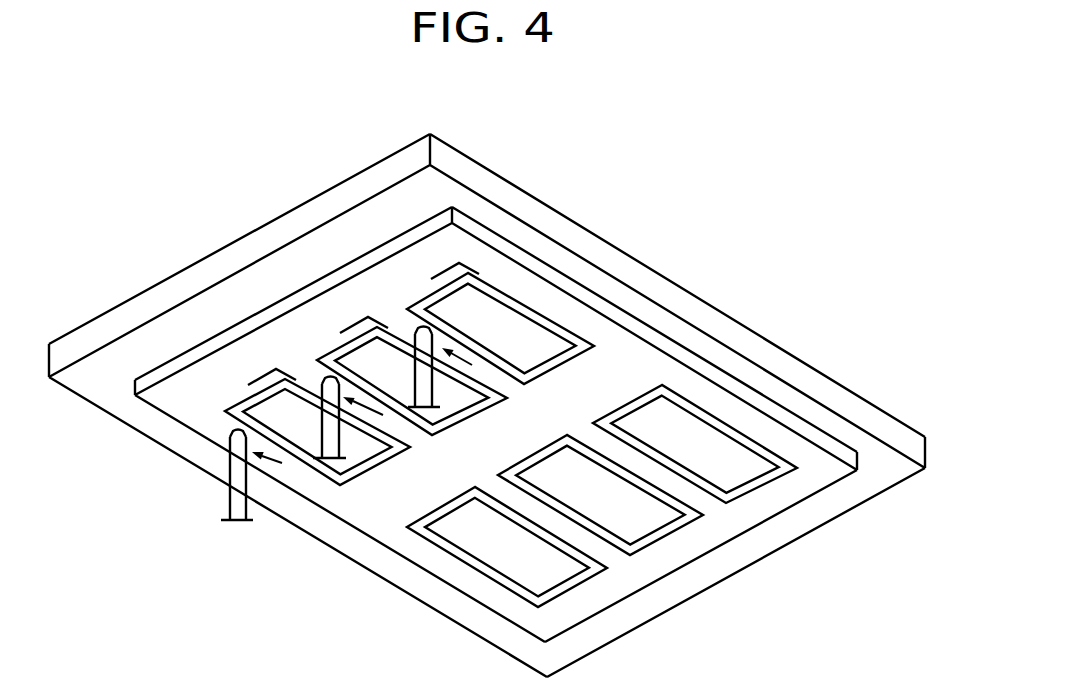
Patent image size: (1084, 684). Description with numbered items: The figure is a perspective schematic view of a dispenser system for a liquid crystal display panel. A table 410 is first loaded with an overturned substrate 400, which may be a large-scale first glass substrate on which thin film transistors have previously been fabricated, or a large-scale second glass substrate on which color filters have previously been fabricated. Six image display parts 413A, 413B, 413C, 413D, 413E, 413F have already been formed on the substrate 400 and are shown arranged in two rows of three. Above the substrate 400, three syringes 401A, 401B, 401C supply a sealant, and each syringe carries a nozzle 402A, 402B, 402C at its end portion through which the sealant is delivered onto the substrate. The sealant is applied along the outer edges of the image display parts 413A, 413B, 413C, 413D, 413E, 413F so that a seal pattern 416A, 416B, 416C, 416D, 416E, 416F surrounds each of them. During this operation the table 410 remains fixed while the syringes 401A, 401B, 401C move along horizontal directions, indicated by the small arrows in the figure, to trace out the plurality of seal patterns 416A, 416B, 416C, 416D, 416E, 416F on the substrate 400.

The substrate 400 is at (843, 478).
The table 410 is at (884, 408).
The syringe 401A is at (231, 428).
The syringe 401B is at (323, 376).
The syringe 401C is at (416, 326).
The nozzle 402A is at (236, 452).
The nozzle 402B is at (328, 400).
The nozzle 402C is at (421, 350).
The image display part 413A is at (723, 460).
The image display part 413B is at (628, 512).
The image display part 413C is at (532, 563).
The image display part 413D is at (521, 335).
The image display part 413E is at (395, 368).
The image display part 413F is at (306, 426).
The seal pattern 416A is at (760, 487).
The seal pattern 416B is at (672, 537).
The seal pattern 416C is at (577, 588).
The seal pattern 416D is at (587, 336).
The seal pattern 416E is at (500, 403).
The seal pattern 416F is at (362, 487).